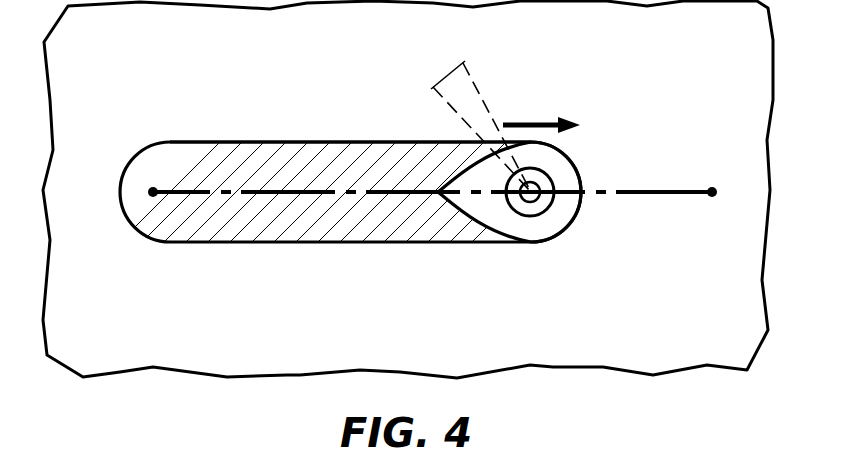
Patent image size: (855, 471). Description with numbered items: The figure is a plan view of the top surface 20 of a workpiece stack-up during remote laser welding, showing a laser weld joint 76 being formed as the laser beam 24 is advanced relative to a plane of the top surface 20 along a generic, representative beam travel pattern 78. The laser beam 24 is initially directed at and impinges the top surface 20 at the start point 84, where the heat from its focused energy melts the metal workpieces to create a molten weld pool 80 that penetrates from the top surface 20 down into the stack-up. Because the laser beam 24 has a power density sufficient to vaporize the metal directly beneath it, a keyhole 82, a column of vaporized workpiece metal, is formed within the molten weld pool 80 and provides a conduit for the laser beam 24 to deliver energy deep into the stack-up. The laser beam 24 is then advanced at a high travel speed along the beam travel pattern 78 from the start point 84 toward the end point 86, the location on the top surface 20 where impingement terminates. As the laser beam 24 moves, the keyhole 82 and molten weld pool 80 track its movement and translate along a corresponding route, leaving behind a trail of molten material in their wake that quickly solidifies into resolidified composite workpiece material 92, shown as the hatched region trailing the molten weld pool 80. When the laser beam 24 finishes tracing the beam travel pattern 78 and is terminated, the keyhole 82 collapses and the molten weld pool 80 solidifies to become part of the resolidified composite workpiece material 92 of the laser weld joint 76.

The top surface 20 is at (423, 341).
The laser beam 24 is at (471, 89).
The laser weld joint 76 is at (231, 132).
The beam travel pattern 78 is at (298, 195).
The molten weld pool 80 is at (553, 160).
The keyhole 82 is at (533, 212).
The start point 84 is at (152, 188).
The end point 86 is at (710, 187).
The resolidified composite workpiece material 92 is at (293, 155).